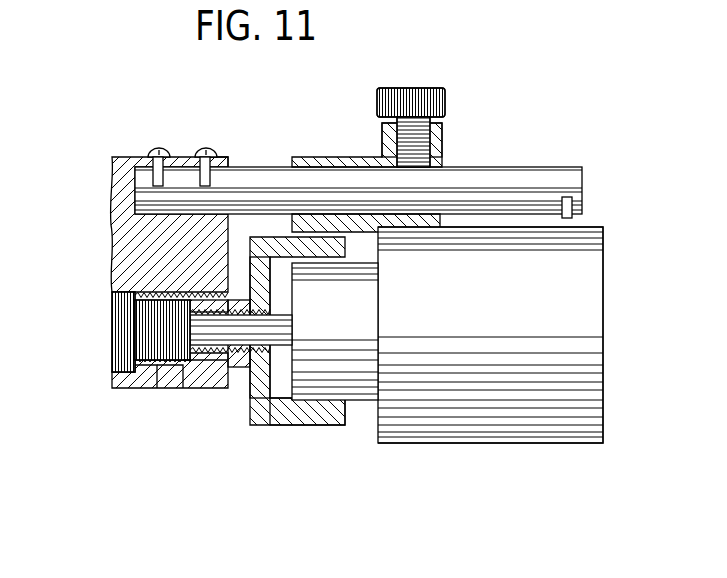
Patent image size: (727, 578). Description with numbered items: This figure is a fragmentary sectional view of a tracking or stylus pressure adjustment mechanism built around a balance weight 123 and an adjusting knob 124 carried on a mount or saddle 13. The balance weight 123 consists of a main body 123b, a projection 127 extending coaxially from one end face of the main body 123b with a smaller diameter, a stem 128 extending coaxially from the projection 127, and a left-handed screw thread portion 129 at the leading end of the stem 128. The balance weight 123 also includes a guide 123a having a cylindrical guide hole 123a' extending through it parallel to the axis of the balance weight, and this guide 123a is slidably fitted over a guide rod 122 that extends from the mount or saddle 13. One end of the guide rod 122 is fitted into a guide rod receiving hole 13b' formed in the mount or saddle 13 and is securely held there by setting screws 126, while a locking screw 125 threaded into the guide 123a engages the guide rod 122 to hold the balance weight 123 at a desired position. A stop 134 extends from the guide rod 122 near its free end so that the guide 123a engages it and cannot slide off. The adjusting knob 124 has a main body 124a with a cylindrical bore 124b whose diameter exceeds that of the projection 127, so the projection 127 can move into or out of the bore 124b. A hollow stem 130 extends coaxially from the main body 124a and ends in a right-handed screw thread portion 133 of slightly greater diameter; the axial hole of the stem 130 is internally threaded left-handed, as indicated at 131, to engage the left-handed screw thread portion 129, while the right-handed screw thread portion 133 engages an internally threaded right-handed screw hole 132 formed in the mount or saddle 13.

The mount or saddle 13 is at (112, 225).
The guide rod receiving hole 13b' is at (238, 136).
The guide rod 122 is at (537, 180).
The balance weight 123 is at (563, 424).
The guide 123a is at (367, 165).
The cylindrical guide hole 123a' is at (443, 134).
The main body 123b is at (580, 318).
The adjusting knob 124 is at (293, 427).
The main body 124a is at (330, 426).
The cylindrical bore 124b is at (277, 402).
The locking screw 125 is at (403, 95).
The setting screws 126 is at (158, 149).
The projection 127 is at (357, 372).
The stem 128 is at (280, 332).
The left-handed screw thread portion 129 is at (175, 366).
The hollow stem 130 is at (205, 370).
The internally threaded axial hole 131 is at (234, 367).
The internally threaded right-handed screw hole 132 is at (118, 348).
The right-handed screw thread portion 133 is at (140, 370).
The stop 134 is at (577, 218).